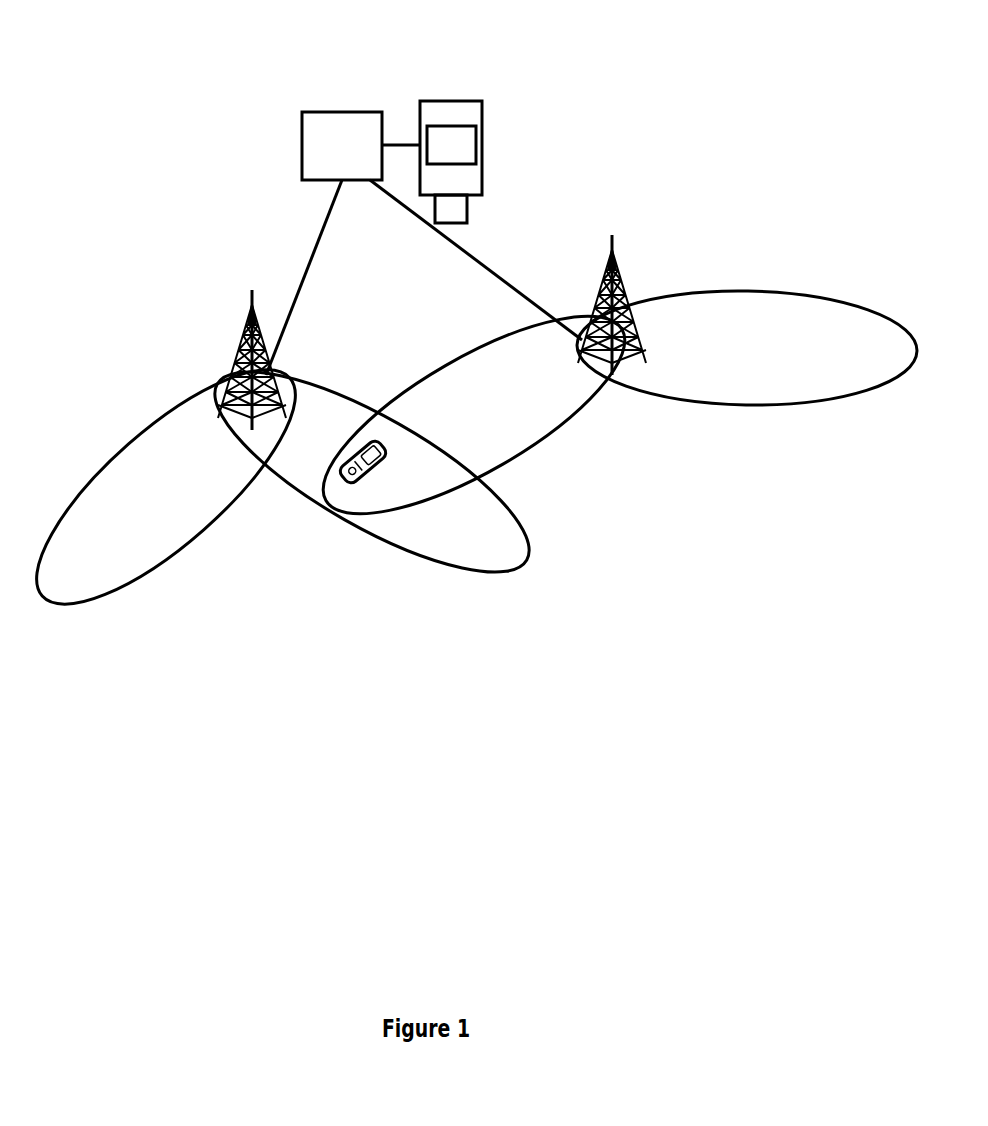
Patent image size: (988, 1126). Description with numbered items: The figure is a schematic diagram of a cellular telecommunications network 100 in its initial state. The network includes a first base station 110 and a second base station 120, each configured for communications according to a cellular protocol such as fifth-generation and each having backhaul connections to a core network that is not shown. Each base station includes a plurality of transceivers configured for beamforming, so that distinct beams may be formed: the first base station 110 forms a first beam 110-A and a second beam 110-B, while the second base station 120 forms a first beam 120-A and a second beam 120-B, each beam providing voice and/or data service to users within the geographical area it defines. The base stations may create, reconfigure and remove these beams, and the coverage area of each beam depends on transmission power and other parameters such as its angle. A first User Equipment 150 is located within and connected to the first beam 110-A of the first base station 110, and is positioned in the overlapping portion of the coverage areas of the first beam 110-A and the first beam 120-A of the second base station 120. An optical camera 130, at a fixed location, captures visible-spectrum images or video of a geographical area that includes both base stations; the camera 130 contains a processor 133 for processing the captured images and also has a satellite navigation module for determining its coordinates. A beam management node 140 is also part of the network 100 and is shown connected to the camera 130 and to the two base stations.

The cellular telecommunications network 100 is at (98, 38).
The first base station 110 is at (248, 322).
The first beam of the first base station 110-A is at (303, 386).
The second beam of the first base station 110-B is at (170, 403).
The second base station 120 is at (607, 273).
The first beam of the second base station 120-A is at (576, 412).
The second beam of the second base station 120-B is at (711, 290).
The optical camera 130 is at (485, 162).
The processor 133 is at (436, 157).
The beam management node 140 is at (325, 157).
The first User Equipment (UE) 150 is at (386, 448).